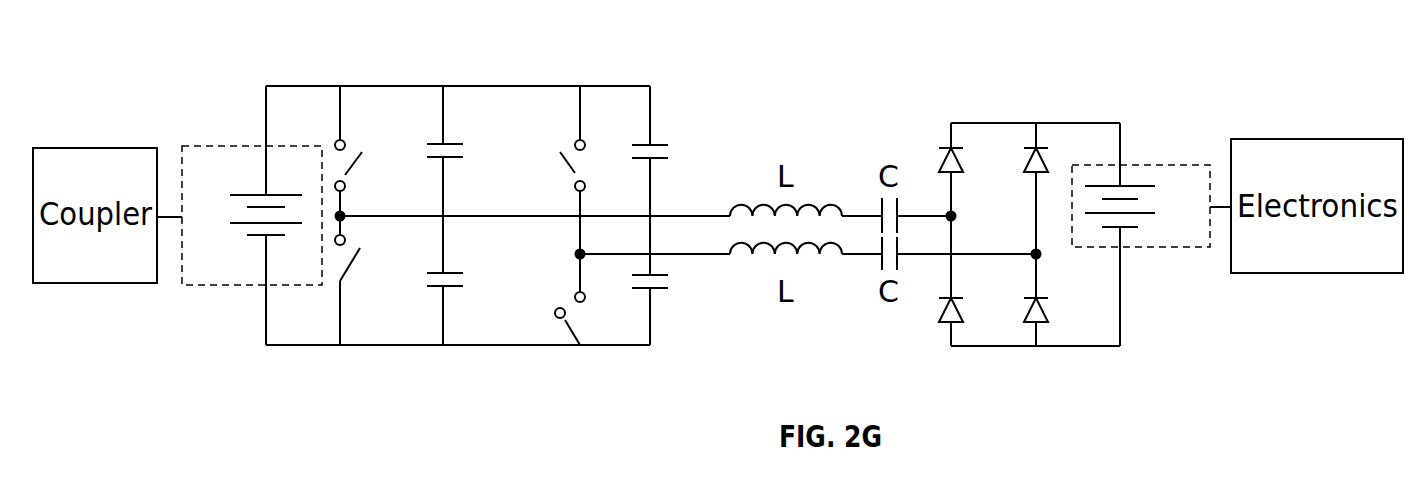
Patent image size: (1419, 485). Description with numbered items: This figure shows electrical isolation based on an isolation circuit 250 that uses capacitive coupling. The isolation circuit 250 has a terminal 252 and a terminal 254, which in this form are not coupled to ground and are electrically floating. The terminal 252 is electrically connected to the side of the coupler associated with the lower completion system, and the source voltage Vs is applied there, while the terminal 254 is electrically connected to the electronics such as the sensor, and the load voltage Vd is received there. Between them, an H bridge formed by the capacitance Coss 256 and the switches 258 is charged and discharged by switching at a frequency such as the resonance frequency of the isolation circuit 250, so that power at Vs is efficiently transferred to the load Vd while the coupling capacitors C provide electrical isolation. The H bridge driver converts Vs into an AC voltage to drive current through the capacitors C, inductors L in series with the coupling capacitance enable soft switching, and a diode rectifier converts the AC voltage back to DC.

The isolation circuit 250 is at (507, 214).
The terminal 252 is at (250, 146).
The terminal 254 is at (1142, 165).
The capacitance Coss 256 is at (454, 145).
The switches 258 is at (347, 170).